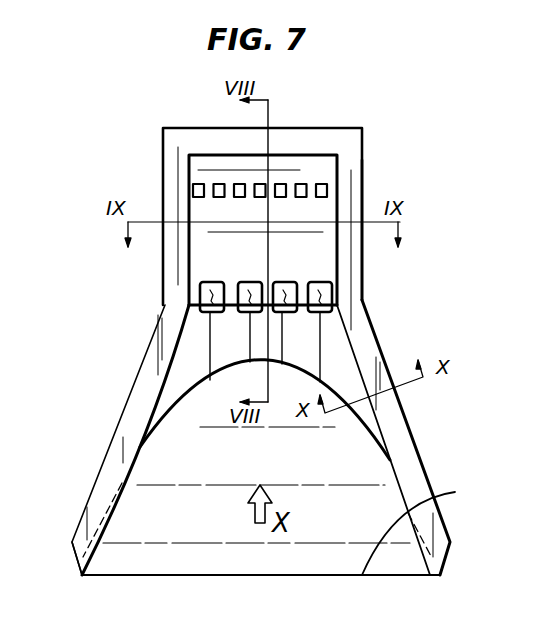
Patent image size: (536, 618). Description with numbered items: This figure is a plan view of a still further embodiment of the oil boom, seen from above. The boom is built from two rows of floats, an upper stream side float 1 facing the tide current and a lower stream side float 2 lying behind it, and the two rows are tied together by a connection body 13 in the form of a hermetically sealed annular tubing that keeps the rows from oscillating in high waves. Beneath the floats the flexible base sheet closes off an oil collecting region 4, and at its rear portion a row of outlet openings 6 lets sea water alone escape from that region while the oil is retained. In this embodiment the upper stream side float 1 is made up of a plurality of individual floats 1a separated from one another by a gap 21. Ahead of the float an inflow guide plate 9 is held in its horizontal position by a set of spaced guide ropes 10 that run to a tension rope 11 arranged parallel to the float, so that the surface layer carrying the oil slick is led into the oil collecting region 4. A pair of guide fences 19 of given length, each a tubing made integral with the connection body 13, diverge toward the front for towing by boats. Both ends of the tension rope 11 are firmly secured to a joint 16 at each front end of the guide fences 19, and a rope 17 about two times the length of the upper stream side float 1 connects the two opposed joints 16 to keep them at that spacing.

The upper stream side float 1 is at (304, 269).
The floats 1a is at (246, 283).
The lower stream side float 2 is at (290, 138).
The oil collecting region 4 is at (202, 274).
The outlet openings 6 is at (298, 190).
The inflow guide plate 9 is at (340, 307).
The guide ropes 10 is at (210, 353).
The tension rope 11 is at (177, 405).
The connection body 13 is at (363, 183).
The joint 16 is at (80, 575).
The rope 17 is at (425, 525).
The guide fences 19 is at (112, 468).
The gap 21 is at (291, 260).